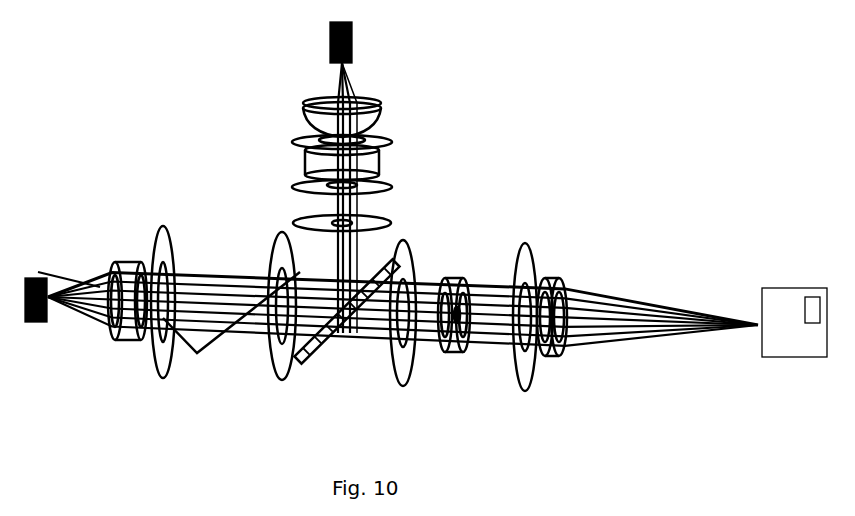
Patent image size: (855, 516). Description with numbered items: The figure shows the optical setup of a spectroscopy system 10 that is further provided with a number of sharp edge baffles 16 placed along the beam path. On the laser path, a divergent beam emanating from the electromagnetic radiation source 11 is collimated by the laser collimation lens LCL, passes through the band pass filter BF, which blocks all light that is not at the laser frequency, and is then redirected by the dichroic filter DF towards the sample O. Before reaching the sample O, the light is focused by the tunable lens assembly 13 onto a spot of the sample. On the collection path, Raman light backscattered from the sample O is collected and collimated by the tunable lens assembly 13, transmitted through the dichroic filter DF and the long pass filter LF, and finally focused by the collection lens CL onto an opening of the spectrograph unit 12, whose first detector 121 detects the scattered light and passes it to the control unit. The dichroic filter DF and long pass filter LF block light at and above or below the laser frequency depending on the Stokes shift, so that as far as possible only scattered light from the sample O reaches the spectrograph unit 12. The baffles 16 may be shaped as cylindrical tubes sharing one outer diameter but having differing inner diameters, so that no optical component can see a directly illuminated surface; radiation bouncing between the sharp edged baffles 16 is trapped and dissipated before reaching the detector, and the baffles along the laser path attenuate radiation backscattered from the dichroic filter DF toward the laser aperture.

The spectroscopy system 10 is at (158, 160).
The electromagnetic radiation source 11 is at (352, 53).
The spectrograph unit 12 is at (795, 357).
The first detector 121 is at (812, 297).
The tunable lens assembly 13 is at (135, 345).
The sharp edge baffles 16 is at (385, 222).
The sample O is at (46, 322).
The laser collimation lens LCL is at (381, 113).
The band pass filter BF is at (379, 163).
The dichroic filter DF is at (322, 352).
The long pass filter LF is at (523, 386).
The collection lens CL is at (567, 352).